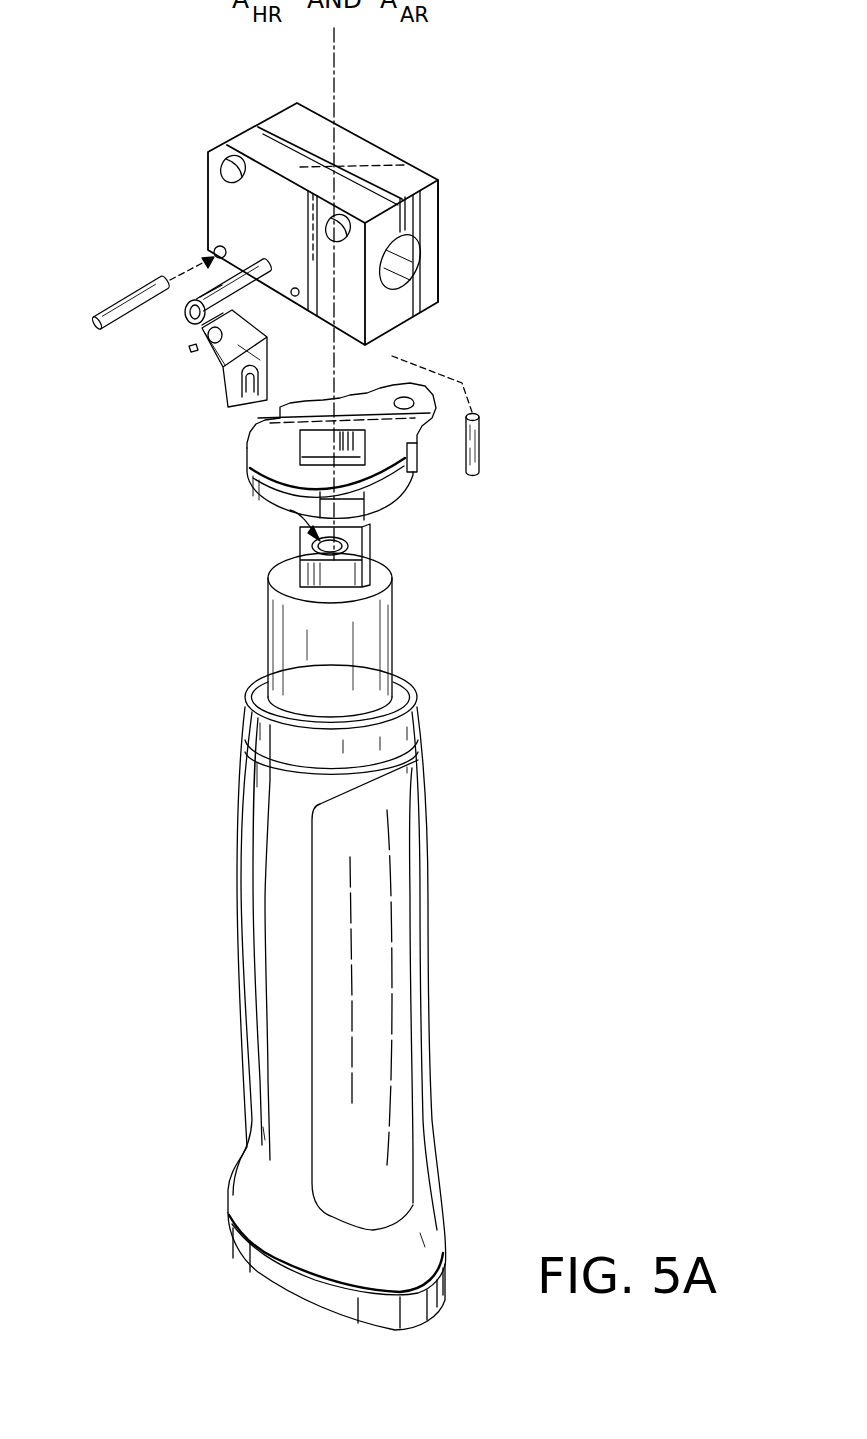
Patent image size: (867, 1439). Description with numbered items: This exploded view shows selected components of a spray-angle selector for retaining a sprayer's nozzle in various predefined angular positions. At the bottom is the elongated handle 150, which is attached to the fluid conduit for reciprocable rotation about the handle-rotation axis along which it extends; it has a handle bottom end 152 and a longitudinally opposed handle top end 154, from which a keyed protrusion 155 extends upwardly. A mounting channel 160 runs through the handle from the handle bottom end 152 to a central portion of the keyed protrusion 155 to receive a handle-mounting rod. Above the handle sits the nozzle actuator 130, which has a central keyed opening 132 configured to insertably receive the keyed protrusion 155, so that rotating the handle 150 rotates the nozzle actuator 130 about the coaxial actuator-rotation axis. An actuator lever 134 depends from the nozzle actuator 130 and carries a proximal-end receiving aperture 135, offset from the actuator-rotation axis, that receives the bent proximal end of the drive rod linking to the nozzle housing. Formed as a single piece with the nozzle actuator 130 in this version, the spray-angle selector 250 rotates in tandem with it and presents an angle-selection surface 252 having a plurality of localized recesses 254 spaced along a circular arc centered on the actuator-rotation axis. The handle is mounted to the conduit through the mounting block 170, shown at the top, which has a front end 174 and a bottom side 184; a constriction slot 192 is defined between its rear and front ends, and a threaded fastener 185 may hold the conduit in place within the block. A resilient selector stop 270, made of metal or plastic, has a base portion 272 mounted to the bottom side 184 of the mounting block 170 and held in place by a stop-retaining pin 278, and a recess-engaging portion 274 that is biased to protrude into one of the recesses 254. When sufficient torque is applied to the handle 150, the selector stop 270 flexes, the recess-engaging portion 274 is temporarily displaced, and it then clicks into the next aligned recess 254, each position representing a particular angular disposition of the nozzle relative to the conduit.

The mounting block 170 is at (400, 180).
The constriction slot 192 is at (343, 168).
The front end 174 is at (430, 208).
The bottom side 184 is at (412, 320).
The threaded fastener 185 is at (247, 262).
The stop-retaining pin 278 is at (137, 295).
The base portion 272 is at (197, 350).
The selector stop 270 is at (225, 370).
The recess-engaging portion 274 is at (230, 401).
The spray-angle selector 250 is at (310, 400).
The angle-selection surface 252 is at (250, 428).
The localized recesses 254 is at (250, 445).
The central keyed opening 132 is at (340, 445).
The proximal-end receiving aperture 135 is at (405, 397).
The actuator lever 134 is at (425, 398).
The nozzle actuator 130 is at (265, 490).
The mounting channel 160 is at (290, 510).
The keyed protrusion 155 is at (365, 530).
The handle top end 154 is at (392, 560).
The handle 150 is at (397, 1158).
The handle bottom end 152 is at (363, 1328).